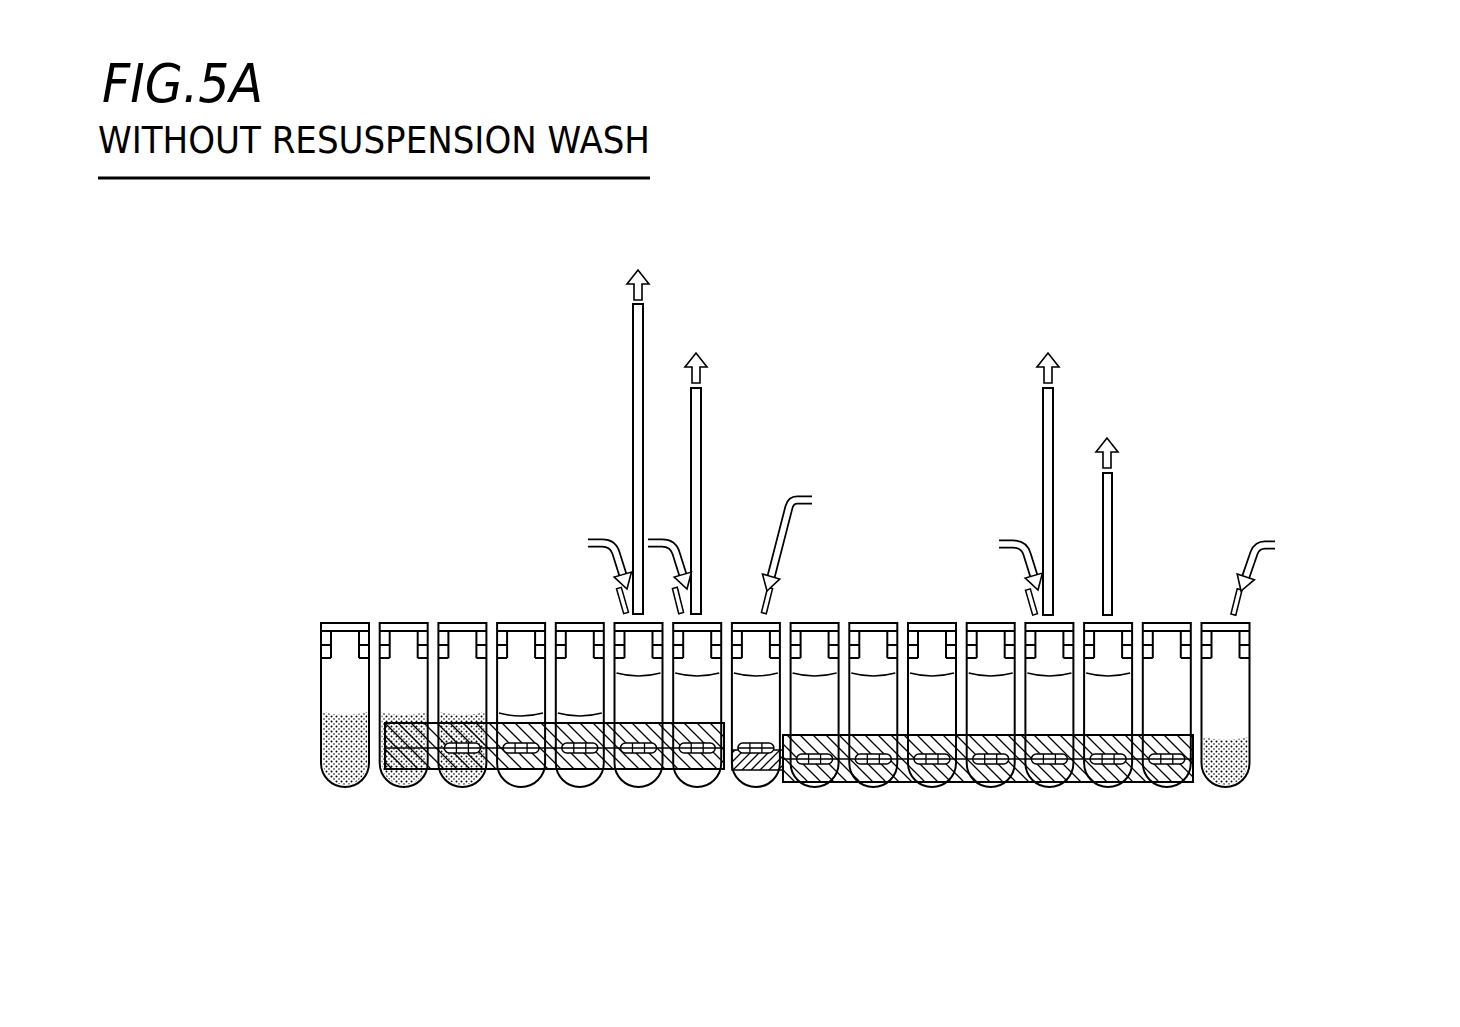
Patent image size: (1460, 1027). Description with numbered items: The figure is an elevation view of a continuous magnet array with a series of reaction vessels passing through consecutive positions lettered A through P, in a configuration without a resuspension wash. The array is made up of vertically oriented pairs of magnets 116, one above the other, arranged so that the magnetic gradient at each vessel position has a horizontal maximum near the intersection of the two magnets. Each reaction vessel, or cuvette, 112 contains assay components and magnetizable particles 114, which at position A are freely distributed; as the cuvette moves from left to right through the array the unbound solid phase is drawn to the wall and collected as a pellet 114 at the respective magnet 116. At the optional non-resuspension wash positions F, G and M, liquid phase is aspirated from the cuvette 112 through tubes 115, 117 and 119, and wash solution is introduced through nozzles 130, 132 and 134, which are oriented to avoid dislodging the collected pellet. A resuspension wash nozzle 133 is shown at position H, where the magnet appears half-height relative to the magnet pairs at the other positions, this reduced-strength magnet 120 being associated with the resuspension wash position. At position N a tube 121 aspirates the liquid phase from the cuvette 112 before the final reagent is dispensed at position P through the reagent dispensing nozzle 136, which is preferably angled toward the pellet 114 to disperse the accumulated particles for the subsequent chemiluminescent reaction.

The reaction vessel 112 is at (310, 683).
The magnetizable particles 114 is at (338, 757).
The aspiration tube 115 is at (633, 336).
The magnets 116 is at (459, 708).
The aspiration tube 117 is at (701, 395).
The aspiration tube 119 is at (1043, 420).
The magnet 120 is at (745, 790).
The aspiration tube 121 is at (1113, 478).
The wash nozzle 130 is at (620, 600).
The wash nozzle 132 is at (690, 600).
The resuspension wash nozzle 133 is at (772, 600).
The wash nozzle 134 is at (1030, 600).
The reagent dispensing nozzle 136 is at (1235, 600).